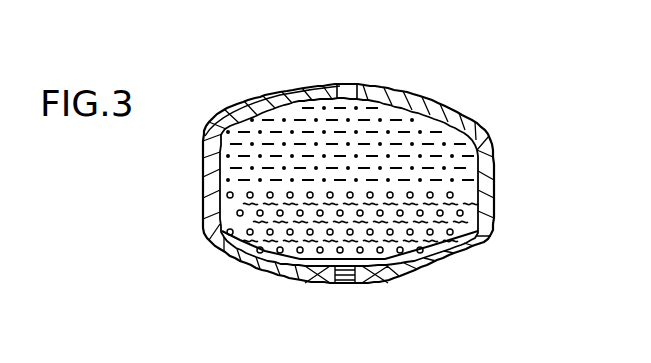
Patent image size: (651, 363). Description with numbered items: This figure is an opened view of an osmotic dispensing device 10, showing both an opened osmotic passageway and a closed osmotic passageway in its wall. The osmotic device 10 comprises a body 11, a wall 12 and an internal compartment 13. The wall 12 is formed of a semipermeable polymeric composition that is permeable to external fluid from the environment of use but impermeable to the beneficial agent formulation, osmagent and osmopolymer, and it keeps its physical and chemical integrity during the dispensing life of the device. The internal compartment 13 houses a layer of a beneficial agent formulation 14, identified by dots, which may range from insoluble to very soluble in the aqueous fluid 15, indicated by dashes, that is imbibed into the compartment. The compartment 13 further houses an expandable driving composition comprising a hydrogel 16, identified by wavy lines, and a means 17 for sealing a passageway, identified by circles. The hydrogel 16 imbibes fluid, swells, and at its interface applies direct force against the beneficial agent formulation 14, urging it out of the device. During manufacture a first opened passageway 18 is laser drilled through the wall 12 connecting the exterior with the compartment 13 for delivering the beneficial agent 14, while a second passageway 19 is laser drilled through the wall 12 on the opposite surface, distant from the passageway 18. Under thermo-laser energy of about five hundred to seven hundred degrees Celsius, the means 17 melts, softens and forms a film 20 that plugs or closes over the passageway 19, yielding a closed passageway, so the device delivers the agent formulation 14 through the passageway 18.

The osmotic dispensing device 10 is at (533, 112).
The body 11 is at (494, 161).
The wall 12 is at (486, 175).
The internal compartment 13 is at (476, 207).
The beneficial agent formulation 14 is at (232, 142).
The aqueous fluid 15 is at (245, 170).
The hydrogel 16 is at (228, 202).
The means for sealing a passageway 17 is at (226, 237).
The first opened passageway 18 is at (340, 97).
The second passageway 19 is at (343, 283).
The film 20 is at (385, 283).